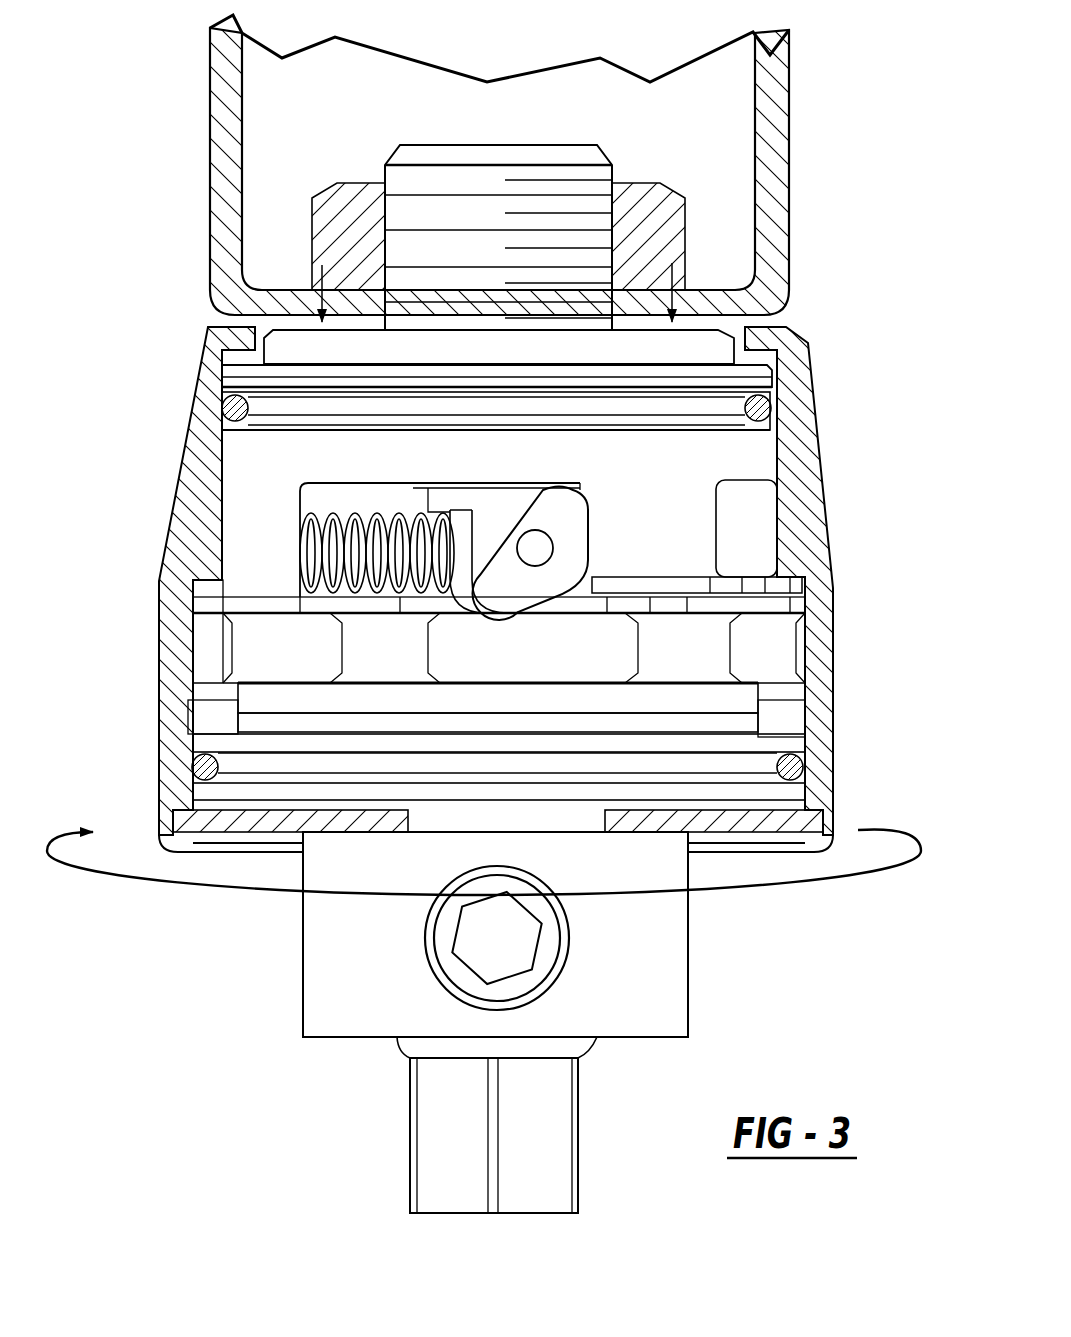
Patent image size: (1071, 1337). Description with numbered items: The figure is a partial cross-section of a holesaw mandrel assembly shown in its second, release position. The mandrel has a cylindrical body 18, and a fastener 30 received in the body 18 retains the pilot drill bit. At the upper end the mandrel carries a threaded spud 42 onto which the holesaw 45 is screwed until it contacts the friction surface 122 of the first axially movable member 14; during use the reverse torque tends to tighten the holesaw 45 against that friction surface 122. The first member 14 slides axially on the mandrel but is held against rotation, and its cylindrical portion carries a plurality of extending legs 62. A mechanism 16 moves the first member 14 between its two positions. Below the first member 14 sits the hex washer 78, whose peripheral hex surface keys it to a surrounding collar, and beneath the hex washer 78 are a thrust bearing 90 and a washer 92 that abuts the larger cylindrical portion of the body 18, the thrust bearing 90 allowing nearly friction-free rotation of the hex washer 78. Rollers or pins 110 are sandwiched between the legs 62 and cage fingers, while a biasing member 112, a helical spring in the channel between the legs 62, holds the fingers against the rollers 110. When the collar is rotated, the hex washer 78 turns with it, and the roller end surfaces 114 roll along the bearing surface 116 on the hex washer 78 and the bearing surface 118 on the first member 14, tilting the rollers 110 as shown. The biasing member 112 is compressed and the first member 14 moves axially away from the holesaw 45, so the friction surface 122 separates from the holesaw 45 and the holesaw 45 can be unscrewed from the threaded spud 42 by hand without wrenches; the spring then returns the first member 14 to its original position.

The first axially movable member 14 is at (723, 455).
The mechanism 16 is at (842, 588).
The body 18 is at (727, 961).
The fastener 30 is at (480, 955).
The threaded spud 42 is at (552, 195).
The holesaw 45 is at (775, 183).
The extending legs 62 is at (668, 544).
The hex washer 78 is at (259, 643).
The thrust bearing 90 is at (257, 696).
The washer 92 is at (253, 722).
The rollers or pins 110 is at (462, 547).
The biasing member 112 is at (337, 535).
The substantially cylindrical or spherical surfaces 114 is at (543, 487).
The bearing surface 116 is at (300, 607).
The bearing surface 118 is at (553, 505).
The friction surface 122 is at (698, 339).